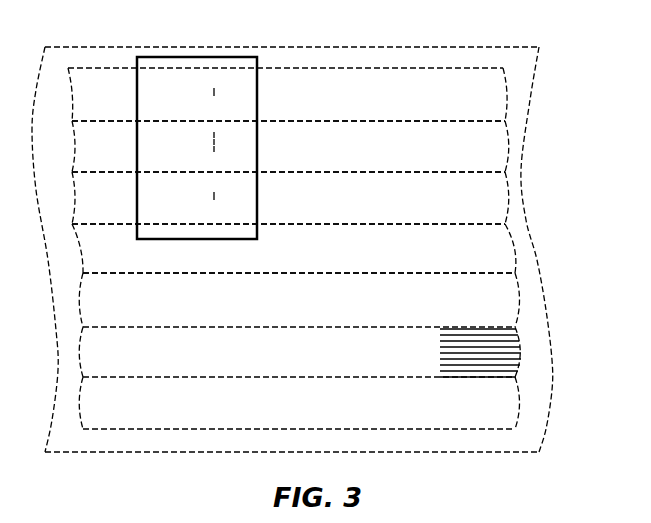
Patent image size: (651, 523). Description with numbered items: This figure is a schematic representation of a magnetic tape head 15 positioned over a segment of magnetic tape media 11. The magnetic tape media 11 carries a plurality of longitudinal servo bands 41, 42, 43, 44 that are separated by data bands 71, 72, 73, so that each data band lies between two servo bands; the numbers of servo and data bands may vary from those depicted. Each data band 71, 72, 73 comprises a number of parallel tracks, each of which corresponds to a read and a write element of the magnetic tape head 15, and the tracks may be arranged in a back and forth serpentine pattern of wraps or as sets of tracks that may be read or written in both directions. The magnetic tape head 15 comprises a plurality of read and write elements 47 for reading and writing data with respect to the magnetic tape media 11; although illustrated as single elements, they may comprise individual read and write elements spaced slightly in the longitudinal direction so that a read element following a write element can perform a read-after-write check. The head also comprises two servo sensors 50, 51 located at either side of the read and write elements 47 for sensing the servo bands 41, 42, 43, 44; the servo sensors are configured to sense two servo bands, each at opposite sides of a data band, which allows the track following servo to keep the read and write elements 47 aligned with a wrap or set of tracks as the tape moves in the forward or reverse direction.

The magnetic tape media 11 is at (459, 56).
The magnetic tape head 15 is at (224, 57).
The servo band 41 is at (492, 94).
The data band 71 is at (507, 146).
The servo band 42 is at (492, 198).
The data band 72 is at (507, 246).
The servo band 43 is at (503, 298).
The data band 73 is at (518, 350).
The servo band 44 is at (503, 400).
The servo sensor 50 is at (214, 92).
The read and write elements 47 is at (214, 135).
The servo sensor 51 is at (214, 196).